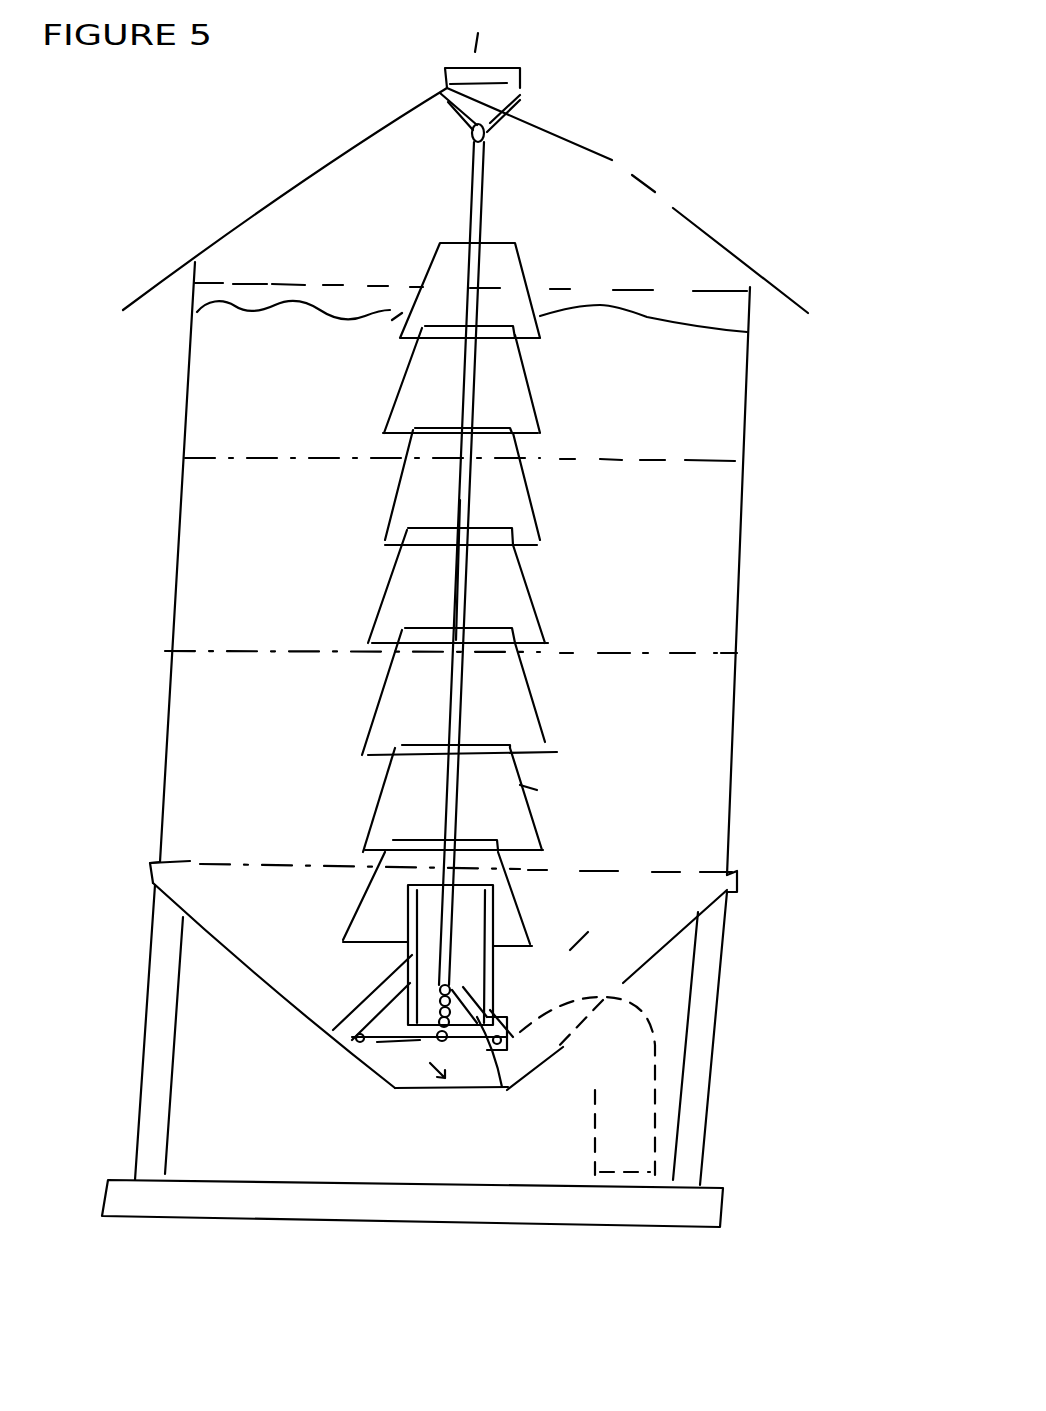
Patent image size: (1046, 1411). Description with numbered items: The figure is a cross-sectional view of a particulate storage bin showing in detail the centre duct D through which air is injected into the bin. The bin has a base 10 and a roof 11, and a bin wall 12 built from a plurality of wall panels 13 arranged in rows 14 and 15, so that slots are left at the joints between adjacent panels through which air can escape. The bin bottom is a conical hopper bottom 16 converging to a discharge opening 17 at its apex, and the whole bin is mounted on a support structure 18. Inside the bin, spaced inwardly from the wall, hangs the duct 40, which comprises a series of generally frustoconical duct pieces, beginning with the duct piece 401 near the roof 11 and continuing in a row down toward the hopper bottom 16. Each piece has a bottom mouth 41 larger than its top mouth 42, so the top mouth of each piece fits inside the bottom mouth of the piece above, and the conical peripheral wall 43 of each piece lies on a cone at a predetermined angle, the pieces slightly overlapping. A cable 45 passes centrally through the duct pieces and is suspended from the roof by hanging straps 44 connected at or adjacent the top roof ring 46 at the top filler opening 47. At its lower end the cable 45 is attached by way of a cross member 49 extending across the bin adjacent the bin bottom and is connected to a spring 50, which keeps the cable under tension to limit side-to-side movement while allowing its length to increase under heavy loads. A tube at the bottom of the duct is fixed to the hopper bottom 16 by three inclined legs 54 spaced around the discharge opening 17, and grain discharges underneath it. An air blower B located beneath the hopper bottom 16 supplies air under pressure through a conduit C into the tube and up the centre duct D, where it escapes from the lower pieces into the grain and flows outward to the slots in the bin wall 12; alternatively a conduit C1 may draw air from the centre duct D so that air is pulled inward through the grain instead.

The base 10 is at (753, 1030).
The roof 11 is at (298, 186).
The bin wall 12 is at (752, 645).
The wall panels 13 is at (693, 773).
The row of wall panels 14 is at (743, 523).
The row of wall panels 15 is at (730, 808).
The hopper bottom 16 is at (290, 1005).
The discharge opening 17 is at (470, 1090).
The support structure 18 is at (162, 1143).
The duct 40 is at (483, 562).
The frustoconical duct piece 401 is at (437, 273).
The bottom mouth 41 is at (537, 340).
The top mouth 42 is at (454, 243).
The peripheral wall 43 is at (532, 488).
The hanging straps 44 is at (512, 118).
The cable 45 is at (463, 585).
The top roof ring 46 is at (525, 85).
The top filler opening 47 is at (470, 42).
The cross member 49 is at (397, 1040).
The spring 50 is at (513, 1095).
The inclined legs 54 is at (385, 993).
The air blower B is at (637, 1118).
The conduit C is at (596, 928).
The conduit C1 is at (643, 351).
The centre duct D is at (537, 790).